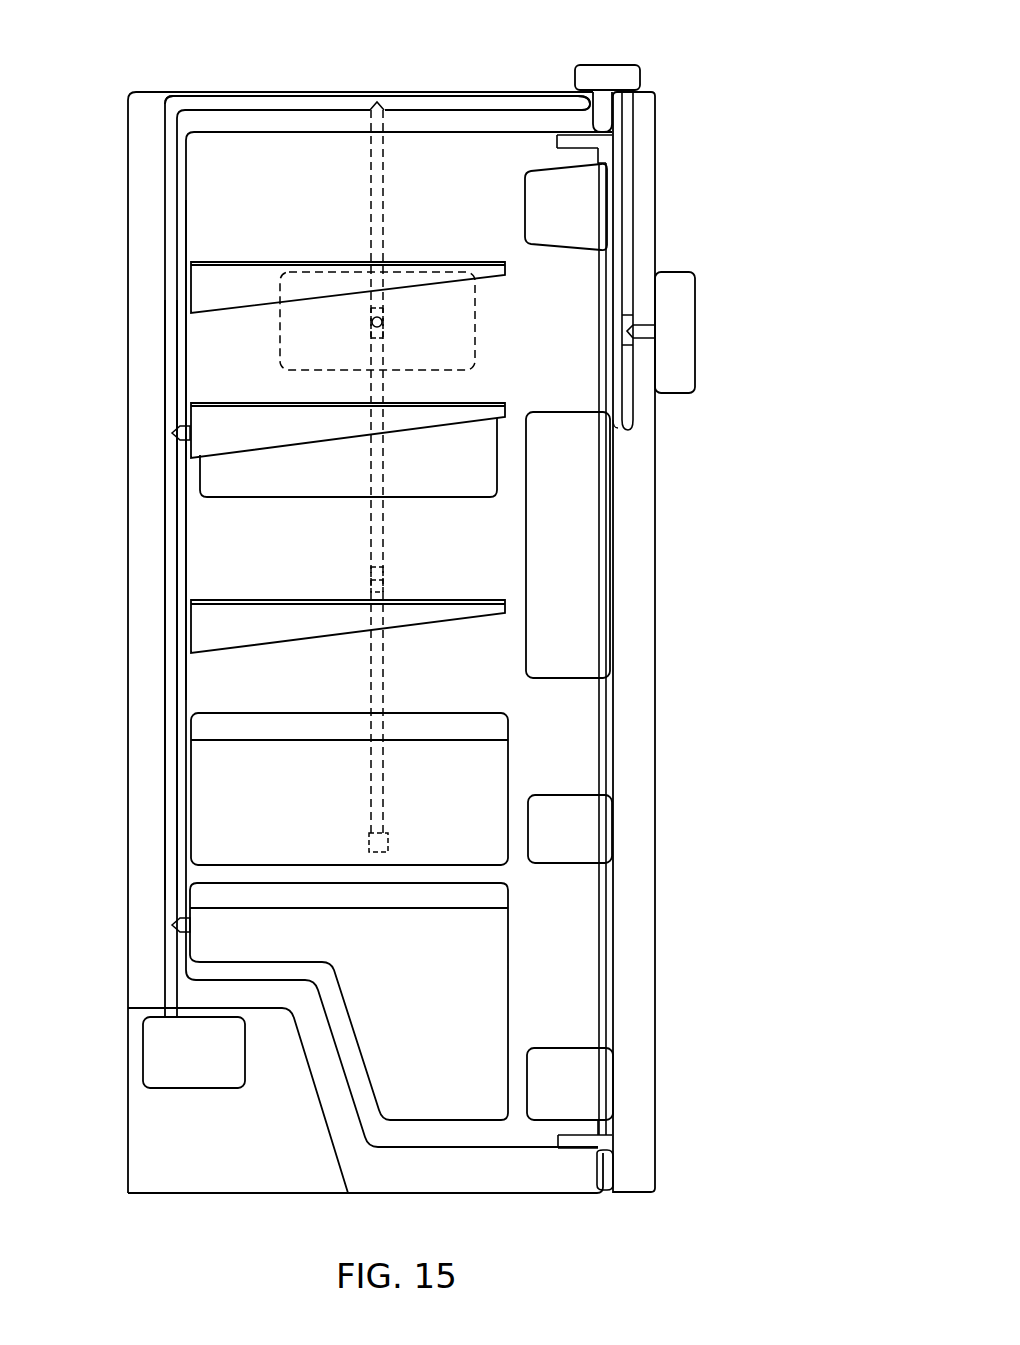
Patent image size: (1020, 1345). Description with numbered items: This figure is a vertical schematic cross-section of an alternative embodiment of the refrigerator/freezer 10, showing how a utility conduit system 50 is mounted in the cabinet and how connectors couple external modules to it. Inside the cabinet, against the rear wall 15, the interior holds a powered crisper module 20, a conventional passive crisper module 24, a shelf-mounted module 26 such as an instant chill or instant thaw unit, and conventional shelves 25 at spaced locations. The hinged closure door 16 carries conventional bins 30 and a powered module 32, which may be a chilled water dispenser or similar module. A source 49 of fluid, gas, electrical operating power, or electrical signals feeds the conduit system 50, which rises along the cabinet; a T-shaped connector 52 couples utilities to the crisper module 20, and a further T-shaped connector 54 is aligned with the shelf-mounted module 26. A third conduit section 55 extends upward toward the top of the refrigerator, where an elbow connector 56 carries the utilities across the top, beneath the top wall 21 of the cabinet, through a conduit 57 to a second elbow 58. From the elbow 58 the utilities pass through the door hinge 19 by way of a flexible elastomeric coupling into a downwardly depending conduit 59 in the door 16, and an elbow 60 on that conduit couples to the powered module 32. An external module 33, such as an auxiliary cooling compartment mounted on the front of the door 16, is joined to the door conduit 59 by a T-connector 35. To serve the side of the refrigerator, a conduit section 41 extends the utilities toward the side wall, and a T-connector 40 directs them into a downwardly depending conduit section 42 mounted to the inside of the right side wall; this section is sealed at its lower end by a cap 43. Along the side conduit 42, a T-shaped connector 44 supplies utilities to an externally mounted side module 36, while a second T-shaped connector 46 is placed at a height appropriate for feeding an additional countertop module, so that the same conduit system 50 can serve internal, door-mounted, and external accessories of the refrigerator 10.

The refrigerator/freezer 10 is at (738, 138).
The rear wall 15 is at (187, 366).
The closure door 16 is at (656, 532).
The door hinge 19 is at (615, 65).
The powered crisper module 20 is at (456, 1008).
The cabinet top wall 21 is at (265, 90).
The passive crisper module 24 is at (456, 813).
The shelves 25 is at (430, 262).
The shelf-mounted module 26 is at (456, 473).
The bins 30 is at (583, 221).
The powered module 32 is at (583, 541).
The external module 33 is at (697, 340).
The T-connector 35 is at (643, 323).
The side module 36 is at (280, 290).
The T-connector 40 is at (370, 100).
The conduit section 41 is at (290, 112).
The downwardly depending conduit section 42 is at (370, 390).
The cap 43 is at (362, 840).
The T-shaped connector 44 is at (383, 322).
The T-shaped connector 46 is at (368, 572).
The source 49 is at (185, 1088).
The conduit system 50 is at (155, 678).
The T-shaped connector 52 is at (172, 930).
The T-shaped connector 54 is at (173, 435).
The third conduit section 55 is at (165, 202).
The elbow connector 56 is at (174, 104).
The conduit 57 is at (445, 98).
The elbow 58 is at (583, 100).
The downwardly depending conduit 59 is at (633, 212).
The elbow 60 is at (617, 432).